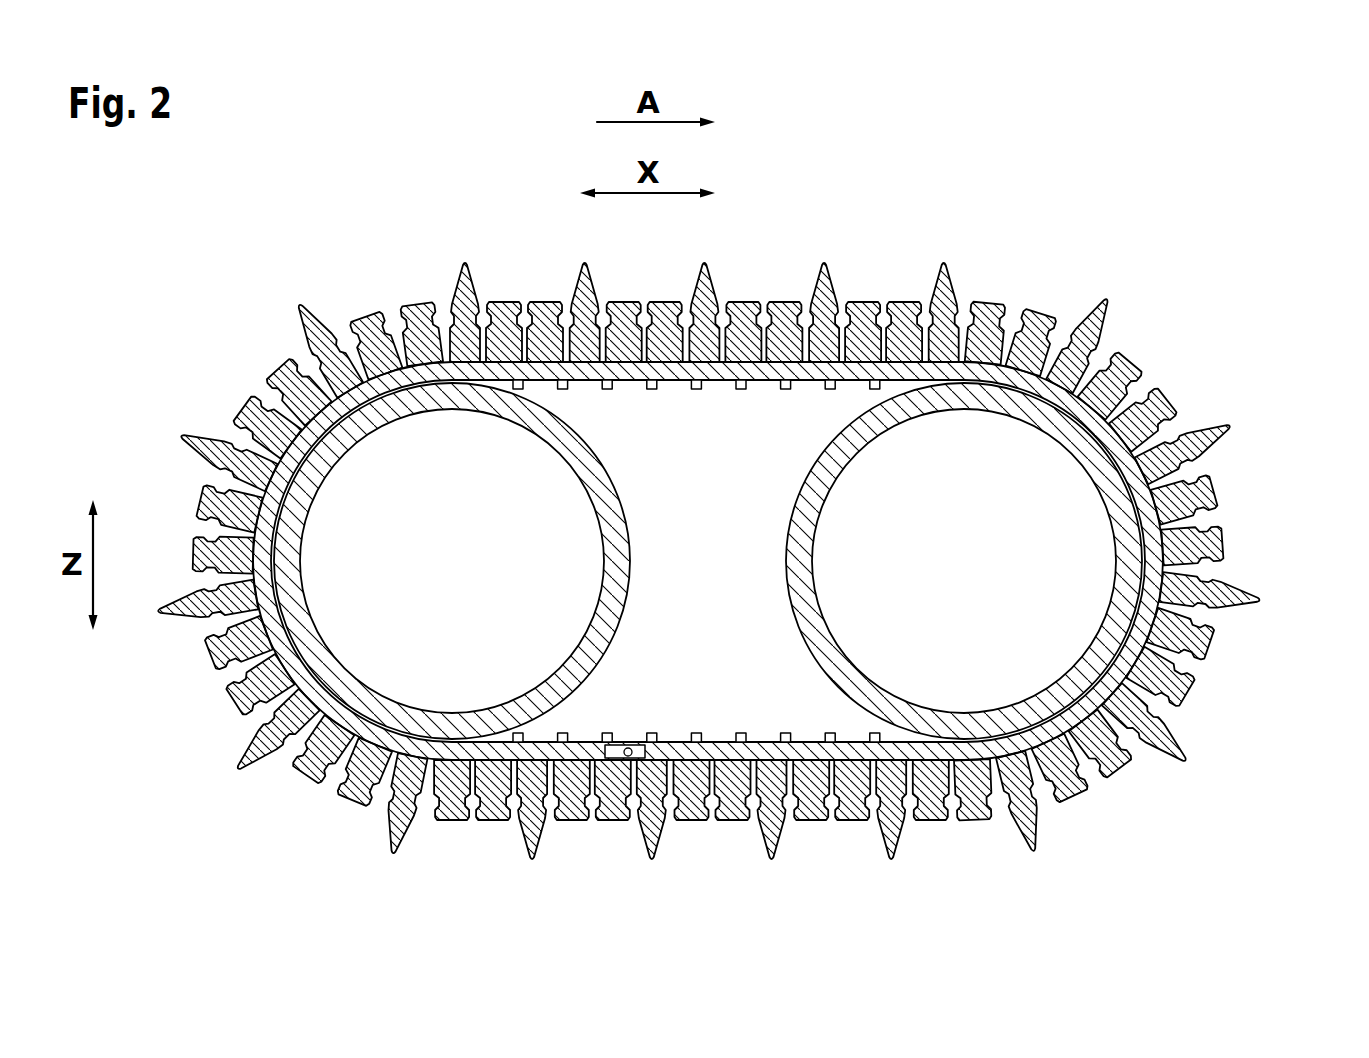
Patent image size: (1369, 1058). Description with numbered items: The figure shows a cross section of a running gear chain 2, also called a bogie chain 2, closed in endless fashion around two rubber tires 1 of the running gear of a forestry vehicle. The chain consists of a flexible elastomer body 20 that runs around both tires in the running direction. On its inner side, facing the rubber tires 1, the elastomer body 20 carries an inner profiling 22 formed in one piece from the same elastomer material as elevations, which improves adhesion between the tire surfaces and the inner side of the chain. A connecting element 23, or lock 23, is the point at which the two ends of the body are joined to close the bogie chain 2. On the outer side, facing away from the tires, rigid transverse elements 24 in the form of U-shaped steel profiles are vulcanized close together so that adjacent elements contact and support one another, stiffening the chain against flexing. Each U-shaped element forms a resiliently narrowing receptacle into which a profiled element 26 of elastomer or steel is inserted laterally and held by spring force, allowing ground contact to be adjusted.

The rubber tire 1 is at (356, 494).
The running gear chain 2 is at (746, 562).
The elastomer body 20 is at (1027, 383).
The inner profiling 22 is at (699, 391).
The connecting element 23 is at (631, 744).
The rigid transverse element 24 is at (1198, 470).
The profiled element 26 is at (1242, 593).